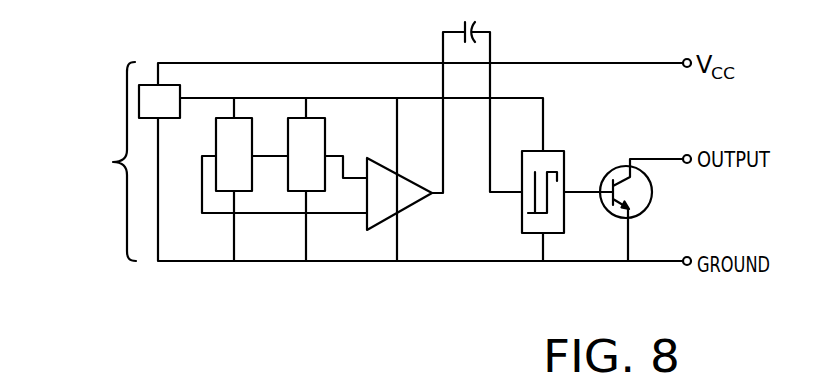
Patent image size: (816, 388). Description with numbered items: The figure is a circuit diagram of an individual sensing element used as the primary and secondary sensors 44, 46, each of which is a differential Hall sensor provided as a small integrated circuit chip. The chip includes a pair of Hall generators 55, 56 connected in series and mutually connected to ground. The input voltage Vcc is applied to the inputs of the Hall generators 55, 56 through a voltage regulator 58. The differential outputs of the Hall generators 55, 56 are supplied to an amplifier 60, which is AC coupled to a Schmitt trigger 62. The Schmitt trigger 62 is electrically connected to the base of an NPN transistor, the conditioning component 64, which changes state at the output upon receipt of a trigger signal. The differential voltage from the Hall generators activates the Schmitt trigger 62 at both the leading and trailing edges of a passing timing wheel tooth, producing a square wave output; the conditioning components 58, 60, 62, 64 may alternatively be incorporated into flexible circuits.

The sensor 44 is at (90, 161).
The sensor 46 is at (90, 161).
The voltage regulator 58 is at (161, 96).
The Hall generator 55 is at (232, 174).
The Hall generator 56 is at (302, 174).
The amplifier 60 is at (402, 198).
The Schmitt trigger 62 is at (553, 223).
The conditioning component 64 is at (647, 212).